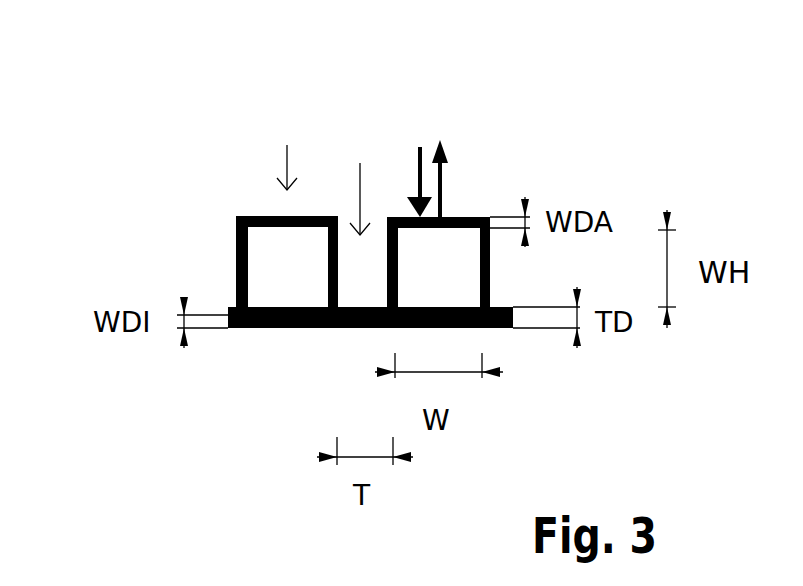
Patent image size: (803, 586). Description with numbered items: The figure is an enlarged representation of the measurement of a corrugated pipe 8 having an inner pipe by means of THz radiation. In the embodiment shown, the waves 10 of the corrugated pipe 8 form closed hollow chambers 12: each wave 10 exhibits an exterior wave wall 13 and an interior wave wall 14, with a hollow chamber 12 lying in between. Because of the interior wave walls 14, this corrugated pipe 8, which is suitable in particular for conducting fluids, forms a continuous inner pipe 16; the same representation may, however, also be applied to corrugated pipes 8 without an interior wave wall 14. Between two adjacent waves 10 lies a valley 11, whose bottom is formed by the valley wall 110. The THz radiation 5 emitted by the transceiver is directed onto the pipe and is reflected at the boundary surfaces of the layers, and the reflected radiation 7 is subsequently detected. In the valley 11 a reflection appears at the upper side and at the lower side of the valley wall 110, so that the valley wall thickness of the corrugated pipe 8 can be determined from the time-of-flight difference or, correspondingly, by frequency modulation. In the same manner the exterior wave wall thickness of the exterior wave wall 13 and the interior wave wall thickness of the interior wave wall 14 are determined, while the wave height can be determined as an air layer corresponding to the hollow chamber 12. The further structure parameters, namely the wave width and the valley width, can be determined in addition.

The THz radiation 5 is at (417, 180).
The reflected radiation 7 is at (442, 187).
The corrugated pipe 8 is at (236, 237).
The wave 10 is at (283, 147).
The valley 11 is at (363, 173).
The hollow chamber 12 is at (458, 235).
The exterior wave wall 13 is at (265, 217).
The interior wave wall 14 is at (277, 330).
The inner pipe 16 is at (487, 330).
The valley wall 110 is at (363, 330).